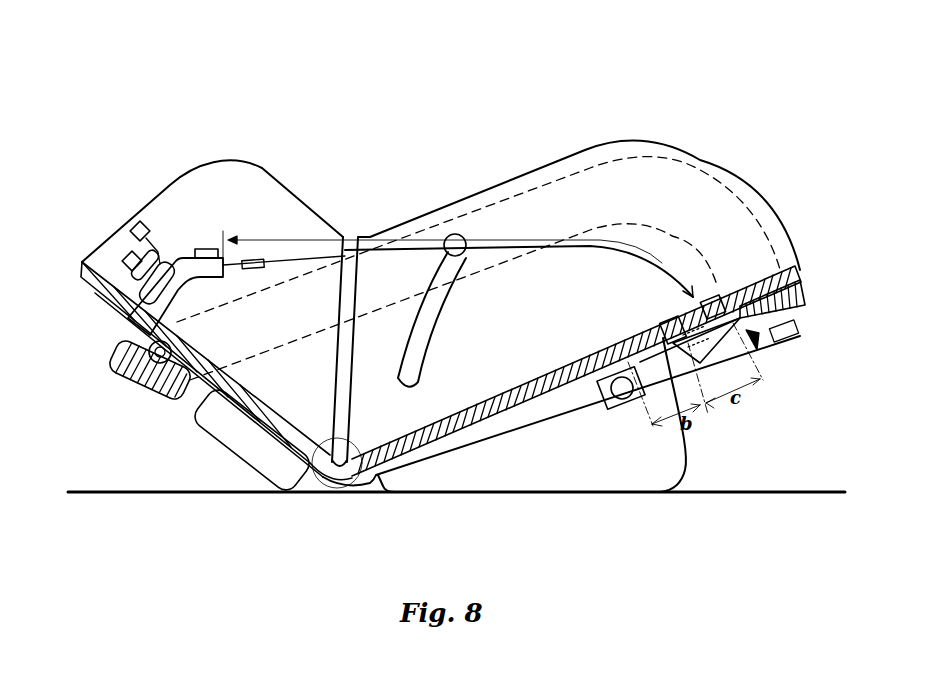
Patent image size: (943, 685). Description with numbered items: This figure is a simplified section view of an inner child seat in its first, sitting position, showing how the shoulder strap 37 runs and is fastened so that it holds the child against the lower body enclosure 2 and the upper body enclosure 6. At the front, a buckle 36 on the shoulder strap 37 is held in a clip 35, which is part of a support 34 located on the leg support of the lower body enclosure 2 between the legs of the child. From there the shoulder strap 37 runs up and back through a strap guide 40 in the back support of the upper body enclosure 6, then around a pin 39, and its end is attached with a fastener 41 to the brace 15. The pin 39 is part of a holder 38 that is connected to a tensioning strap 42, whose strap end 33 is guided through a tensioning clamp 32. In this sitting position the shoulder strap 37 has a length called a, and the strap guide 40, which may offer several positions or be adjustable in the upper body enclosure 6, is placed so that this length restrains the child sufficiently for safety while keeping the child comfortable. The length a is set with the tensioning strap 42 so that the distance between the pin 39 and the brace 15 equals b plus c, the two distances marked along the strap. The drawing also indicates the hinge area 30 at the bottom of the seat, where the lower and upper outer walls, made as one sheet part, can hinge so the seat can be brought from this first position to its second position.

The lower body enclosure 2 is at (268, 127).
The upper body enclosure 6 is at (648, 115).
The brace 15 is at (110, 362).
The hinge area 30 is at (355, 452).
The tensioning clamp 32 is at (125, 252).
The strap end 33 is at (141, 224).
The support 34 is at (170, 262).
The clip 35 is at (208, 247).
The buckle 36 is at (255, 270).
The shoulder strap 37 is at (500, 255).
The holder 38 is at (617, 410).
The pin 39 is at (640, 345).
The strap guide 40 is at (718, 312).
The fastener 41 is at (760, 348).
The tensioning strap 42 is at (536, 428).